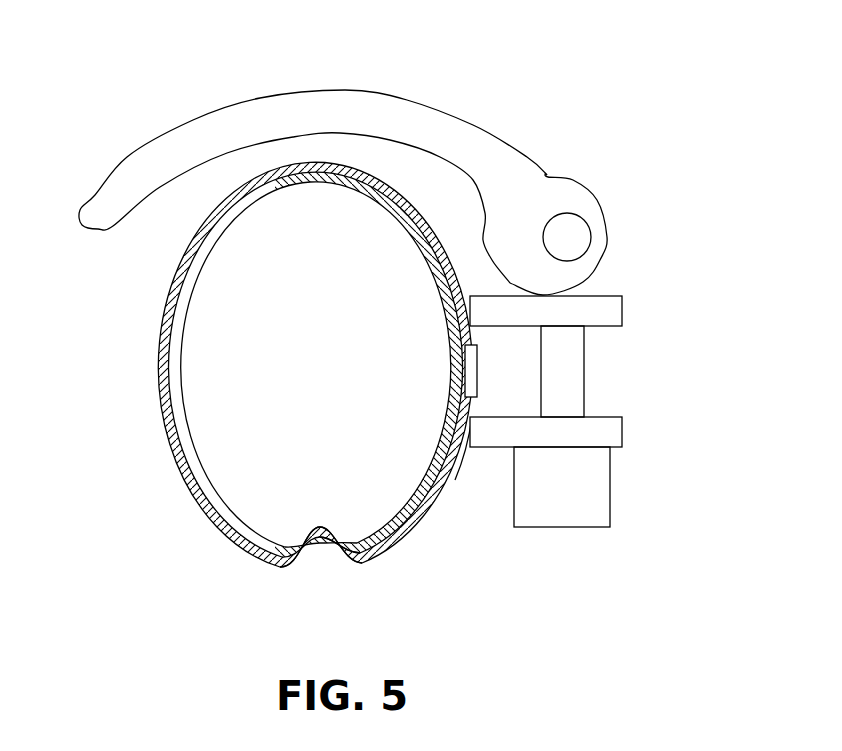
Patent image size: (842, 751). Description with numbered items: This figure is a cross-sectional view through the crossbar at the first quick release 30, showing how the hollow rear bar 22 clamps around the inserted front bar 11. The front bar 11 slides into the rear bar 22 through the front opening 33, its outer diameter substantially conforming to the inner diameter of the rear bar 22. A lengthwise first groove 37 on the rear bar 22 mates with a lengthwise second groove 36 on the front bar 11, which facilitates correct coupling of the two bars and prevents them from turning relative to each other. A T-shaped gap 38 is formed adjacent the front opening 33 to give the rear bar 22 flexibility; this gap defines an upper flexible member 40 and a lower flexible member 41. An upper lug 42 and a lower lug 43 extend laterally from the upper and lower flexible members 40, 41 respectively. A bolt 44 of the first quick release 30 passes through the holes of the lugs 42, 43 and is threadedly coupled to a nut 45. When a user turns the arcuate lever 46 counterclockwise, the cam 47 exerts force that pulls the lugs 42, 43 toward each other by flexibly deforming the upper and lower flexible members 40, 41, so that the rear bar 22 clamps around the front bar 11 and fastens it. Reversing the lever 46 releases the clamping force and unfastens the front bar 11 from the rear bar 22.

The first quick release 30 is at (490, 108).
The front bar 11 is at (190, 468).
The rear bar 22 is at (274, 377).
The front opening 33 is at (242, 490).
The second groove 36 is at (377, 543).
The first groove 37 is at (320, 545).
The T-shaped gap 38 is at (470, 365).
The upper flexible member 40 is at (393, 170).
The lower flexible member 41 is at (463, 447).
The upper lug 42 is at (596, 310).
The lower lug 43 is at (610, 432).
The bolt 44 is at (567, 387).
The nut 45 is at (597, 490).
The arcuate lever 46 is at (188, 138).
The cam 47 is at (603, 272).